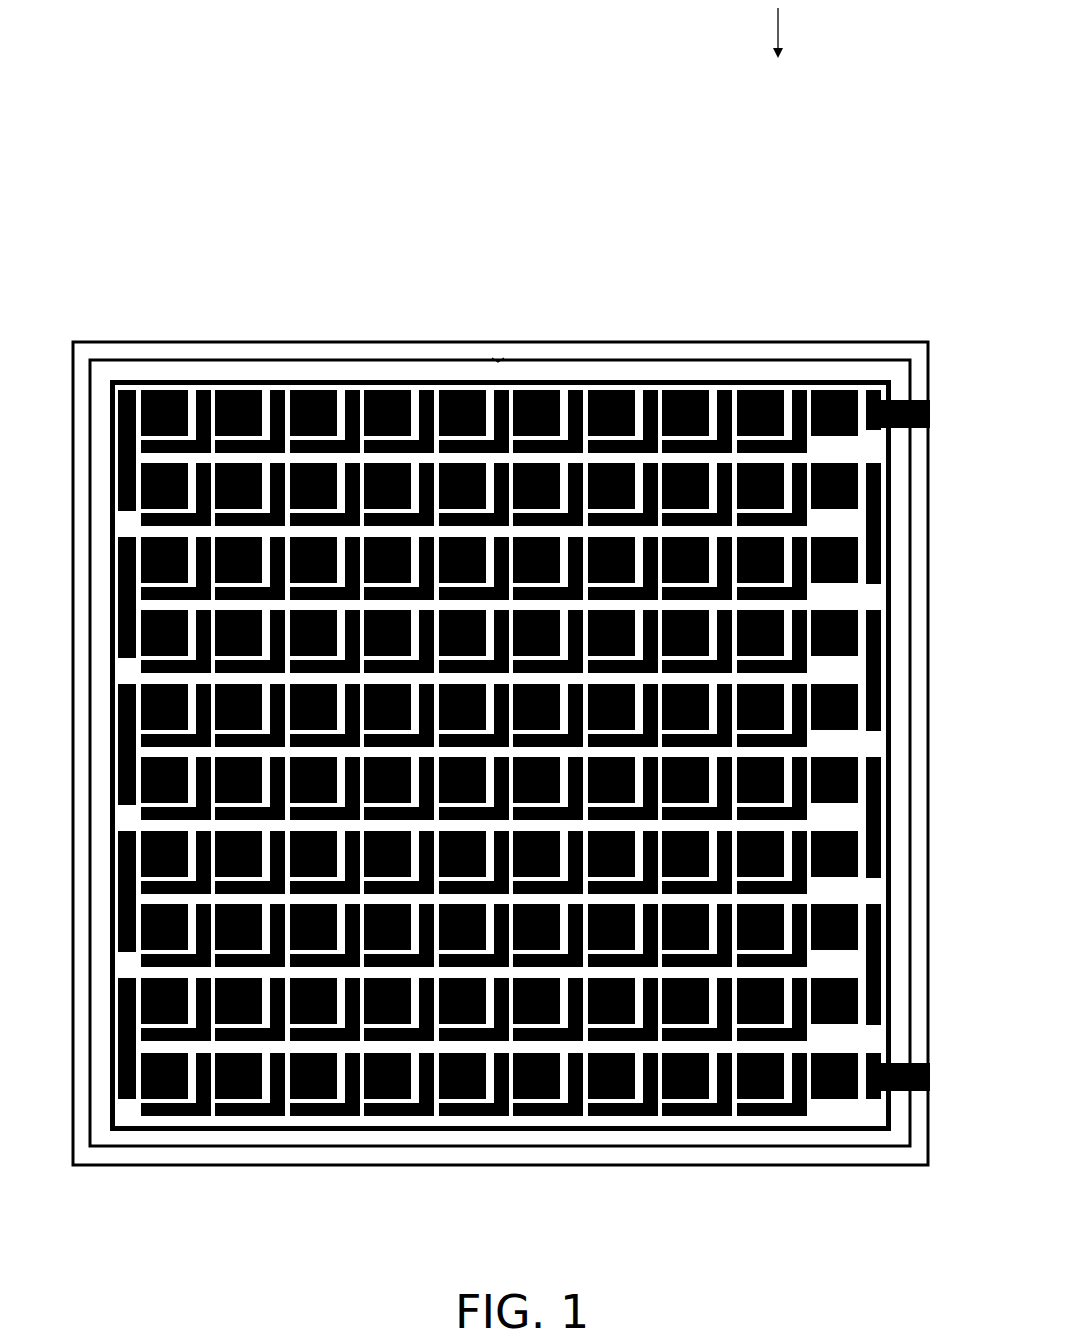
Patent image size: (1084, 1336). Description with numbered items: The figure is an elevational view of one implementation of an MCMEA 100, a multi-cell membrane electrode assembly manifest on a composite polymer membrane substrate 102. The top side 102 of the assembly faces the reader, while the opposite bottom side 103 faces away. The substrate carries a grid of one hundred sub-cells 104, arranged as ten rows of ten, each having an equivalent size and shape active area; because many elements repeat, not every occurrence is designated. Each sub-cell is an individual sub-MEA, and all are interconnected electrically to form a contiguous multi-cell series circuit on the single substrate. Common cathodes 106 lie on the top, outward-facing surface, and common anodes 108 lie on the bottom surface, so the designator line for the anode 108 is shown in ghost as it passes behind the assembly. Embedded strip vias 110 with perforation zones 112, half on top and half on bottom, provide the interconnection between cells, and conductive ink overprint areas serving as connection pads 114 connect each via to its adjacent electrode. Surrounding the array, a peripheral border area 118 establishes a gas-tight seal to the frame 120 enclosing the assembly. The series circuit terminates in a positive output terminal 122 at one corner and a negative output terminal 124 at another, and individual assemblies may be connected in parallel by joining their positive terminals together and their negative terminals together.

The MCMEA 100 is at (222, 40).
The composite polymer membrane substrate 102 is at (448, 348).
The bottom side 103 is at (490, 348).
The sub-cells 104 is at (231, 378).
The common cathodes 106 is at (158, 382).
The common anodes 108 is at (607, 385).
The embedded strip vias 110 is at (333, 430).
The perforation zones 112 is at (627, 430).
The connection pads 114 is at (742, 378).
The peripheral border area 118 is at (449, 1126).
The frame 120 is at (228, 1158).
The positive output terminal 122 is at (921, 405).
The negative output terminal 124 is at (921, 1070).